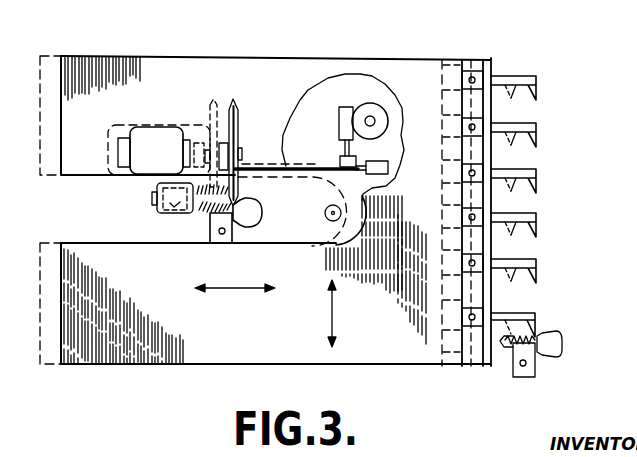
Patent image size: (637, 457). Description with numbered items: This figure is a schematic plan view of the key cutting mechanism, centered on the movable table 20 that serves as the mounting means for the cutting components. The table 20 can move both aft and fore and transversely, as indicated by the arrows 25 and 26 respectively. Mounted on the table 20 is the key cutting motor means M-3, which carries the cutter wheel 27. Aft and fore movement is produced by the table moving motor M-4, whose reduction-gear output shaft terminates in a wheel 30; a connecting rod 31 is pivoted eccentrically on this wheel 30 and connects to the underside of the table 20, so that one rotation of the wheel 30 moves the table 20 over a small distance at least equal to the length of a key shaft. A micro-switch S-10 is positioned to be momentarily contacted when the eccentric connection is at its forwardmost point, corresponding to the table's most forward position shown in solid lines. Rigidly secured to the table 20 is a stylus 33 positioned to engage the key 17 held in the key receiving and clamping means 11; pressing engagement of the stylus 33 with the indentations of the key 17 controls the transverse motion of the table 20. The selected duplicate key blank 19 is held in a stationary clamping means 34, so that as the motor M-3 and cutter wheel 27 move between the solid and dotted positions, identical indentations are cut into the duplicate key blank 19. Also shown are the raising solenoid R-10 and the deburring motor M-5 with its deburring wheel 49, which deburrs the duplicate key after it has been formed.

The table 20 is at (117, 365).
The key receiving and clamping means 11 is at (510, 362).
The key 17 is at (553, 338).
The stylus 33 is at (534, 316).
The key cutting motor means M-3 is at (159, 150).
The table moving motor M-4 is at (375, 112).
The deburring motor M-5 is at (155, 198).
The raising solenoid R-10 is at (160, 211).
The micro-switch S-10 is at (388, 173).
The cutter wheel 27 is at (239, 124).
The connecting rod 31 is at (250, 166).
The wheel 30 is at (346, 157).
The duplicate key blank 19 is at (262, 207).
The deburring wheel 49 is at (211, 207).
The stationary clamping means 34 is at (220, 236).
The arrow 25 is at (240, 283).
The arrow 26 is at (334, 318).